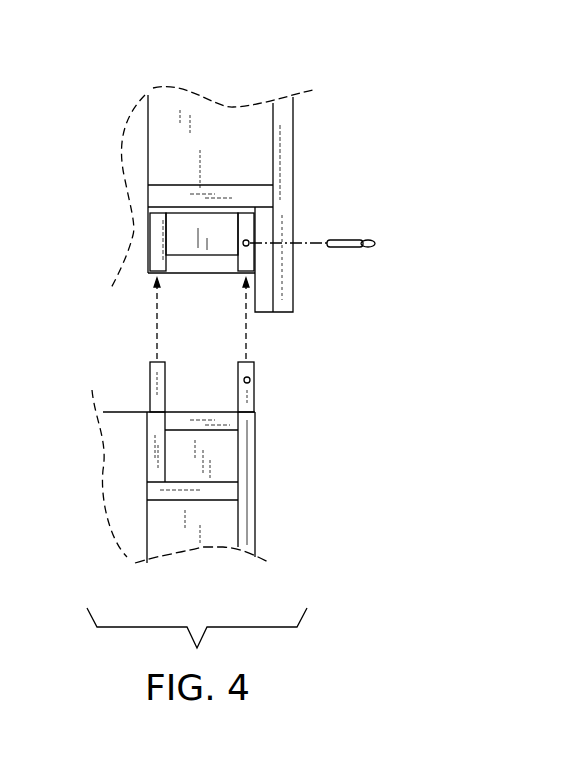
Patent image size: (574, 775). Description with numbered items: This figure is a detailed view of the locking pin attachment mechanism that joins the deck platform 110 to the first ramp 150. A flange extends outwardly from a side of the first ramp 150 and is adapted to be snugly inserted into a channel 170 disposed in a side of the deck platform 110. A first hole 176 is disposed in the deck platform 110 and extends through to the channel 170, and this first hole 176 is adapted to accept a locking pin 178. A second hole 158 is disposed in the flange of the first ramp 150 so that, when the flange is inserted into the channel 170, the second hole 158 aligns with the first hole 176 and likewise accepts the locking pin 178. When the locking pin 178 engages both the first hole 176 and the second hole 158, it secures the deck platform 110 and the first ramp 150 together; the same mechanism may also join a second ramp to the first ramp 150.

The deck platform 110 is at (208, 112).
The channel 170 is at (152, 243).
The first hole 176 is at (250, 241).
The locking pin 178 is at (340, 250).
The second hole 158 is at (251, 380).
The first ramp 150 is at (252, 513).